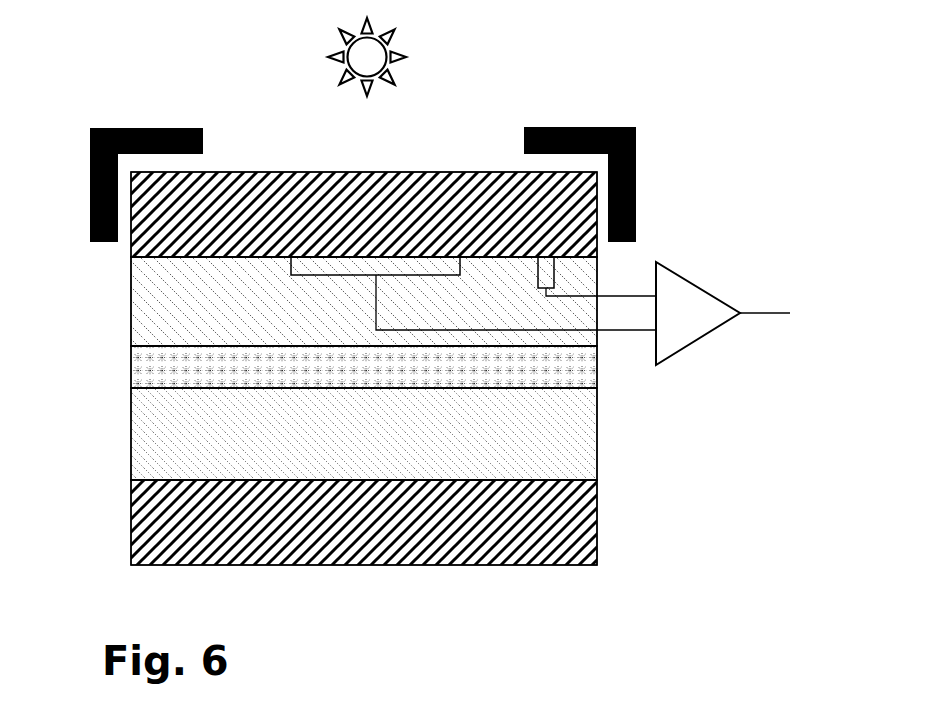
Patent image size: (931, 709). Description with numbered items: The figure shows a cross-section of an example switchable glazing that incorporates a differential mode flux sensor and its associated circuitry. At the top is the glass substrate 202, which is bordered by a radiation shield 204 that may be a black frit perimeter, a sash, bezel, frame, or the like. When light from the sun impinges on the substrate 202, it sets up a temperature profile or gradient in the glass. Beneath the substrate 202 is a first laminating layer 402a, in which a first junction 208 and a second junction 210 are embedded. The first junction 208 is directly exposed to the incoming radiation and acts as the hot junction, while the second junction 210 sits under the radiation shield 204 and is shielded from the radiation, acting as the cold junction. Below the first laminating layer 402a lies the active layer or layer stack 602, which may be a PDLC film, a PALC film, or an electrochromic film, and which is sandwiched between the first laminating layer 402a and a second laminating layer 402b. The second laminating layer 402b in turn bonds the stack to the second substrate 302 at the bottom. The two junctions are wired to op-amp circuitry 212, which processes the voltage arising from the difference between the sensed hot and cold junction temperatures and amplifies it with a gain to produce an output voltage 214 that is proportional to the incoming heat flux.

The glass substrate 202 is at (363, 171).
The radiation shield 204 is at (636, 141).
The first junction 208 is at (317, 276).
The second junction 210 is at (538, 272).
The op-amp circuitry 212 is at (680, 273).
The voltage 214 is at (773, 313).
The second substrate 302 is at (367, 565).
The first laminating layer 402a is at (131, 302).
The second laminating layer 402b is at (131, 435).
The active layer or layer stack 602 is at (131, 368).